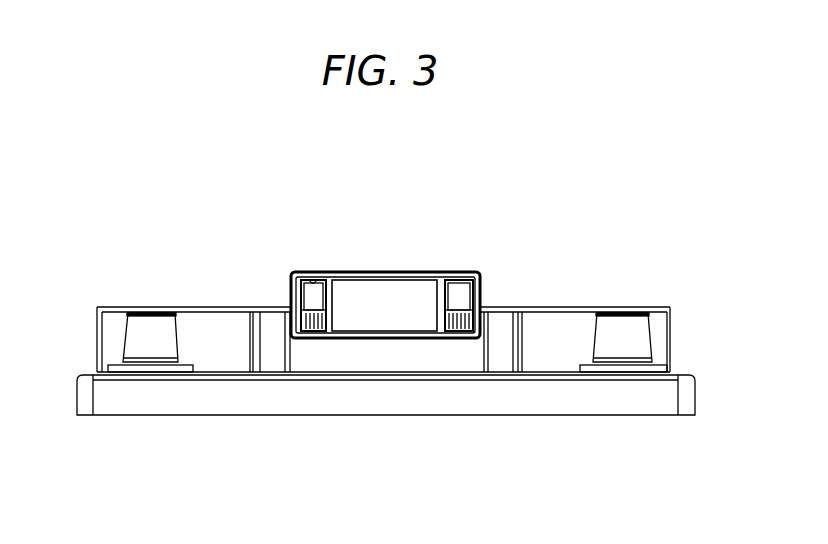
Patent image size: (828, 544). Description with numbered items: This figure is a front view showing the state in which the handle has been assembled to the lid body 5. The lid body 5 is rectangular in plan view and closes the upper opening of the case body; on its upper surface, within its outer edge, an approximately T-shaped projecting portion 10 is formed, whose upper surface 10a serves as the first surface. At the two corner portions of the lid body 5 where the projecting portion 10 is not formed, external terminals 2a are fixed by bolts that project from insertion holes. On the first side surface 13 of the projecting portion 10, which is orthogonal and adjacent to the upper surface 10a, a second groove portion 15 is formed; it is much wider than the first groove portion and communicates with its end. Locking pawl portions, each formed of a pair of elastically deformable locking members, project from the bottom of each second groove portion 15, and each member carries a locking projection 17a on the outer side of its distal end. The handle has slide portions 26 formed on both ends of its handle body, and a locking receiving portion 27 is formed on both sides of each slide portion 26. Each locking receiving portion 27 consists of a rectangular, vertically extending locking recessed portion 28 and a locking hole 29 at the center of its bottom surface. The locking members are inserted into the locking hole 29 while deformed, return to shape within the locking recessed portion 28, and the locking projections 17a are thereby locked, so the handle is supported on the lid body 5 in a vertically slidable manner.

The lid body 5 is at (215, 416).
The projecting portion 10 is at (212, 318).
The upper surface of the projecting portion 10a is at (132, 310).
The external terminal 2a is at (616, 325).
The first side surface 13 is at (275, 358).
The second groove portion 15 is at (432, 357).
The locking projection 17a is at (302, 341).
The slide portion 26 is at (412, 272).
The locking receiving portion 27 is at (273, 221).
The locking recessed portion 28 is at (297, 278).
The locking hole 29 is at (318, 278).